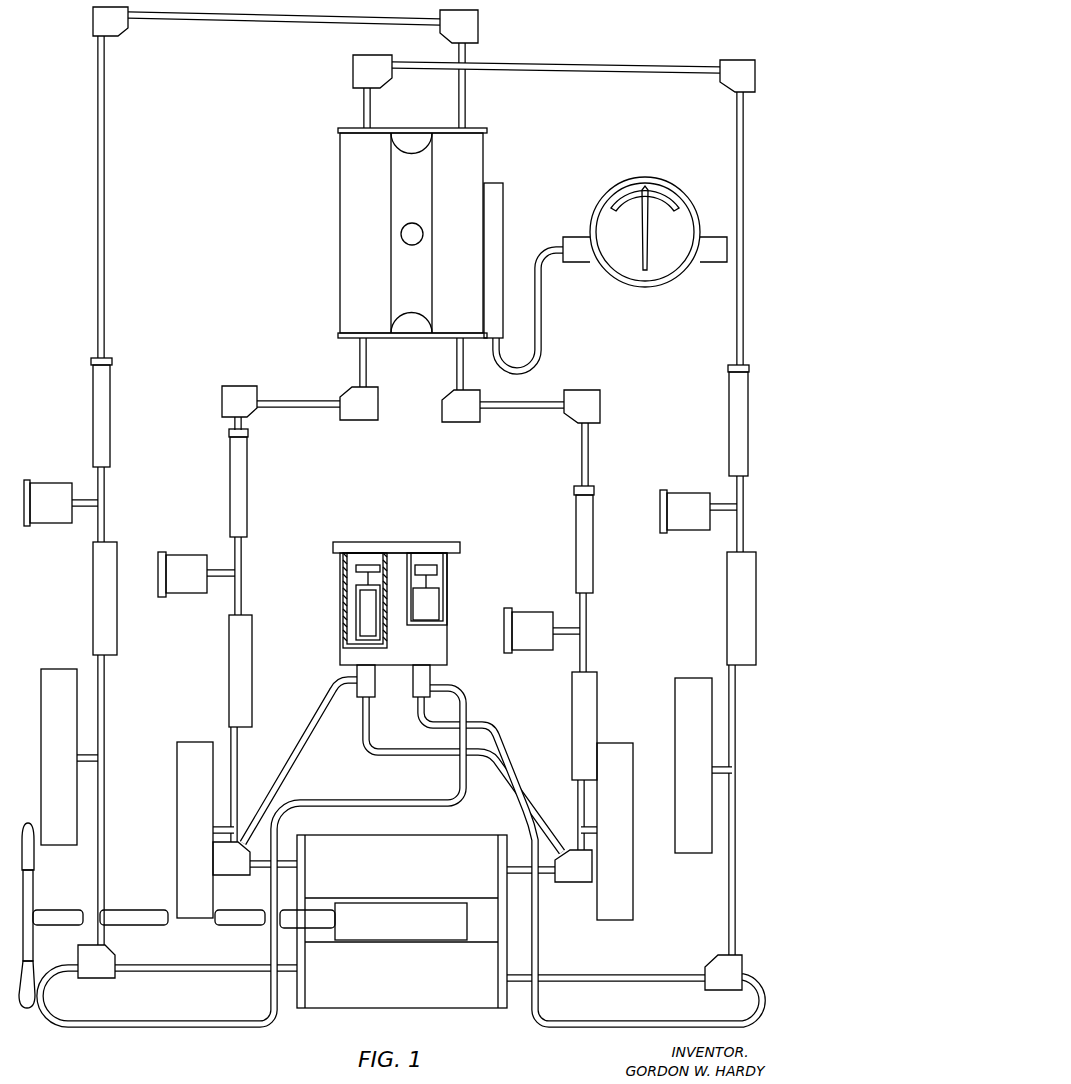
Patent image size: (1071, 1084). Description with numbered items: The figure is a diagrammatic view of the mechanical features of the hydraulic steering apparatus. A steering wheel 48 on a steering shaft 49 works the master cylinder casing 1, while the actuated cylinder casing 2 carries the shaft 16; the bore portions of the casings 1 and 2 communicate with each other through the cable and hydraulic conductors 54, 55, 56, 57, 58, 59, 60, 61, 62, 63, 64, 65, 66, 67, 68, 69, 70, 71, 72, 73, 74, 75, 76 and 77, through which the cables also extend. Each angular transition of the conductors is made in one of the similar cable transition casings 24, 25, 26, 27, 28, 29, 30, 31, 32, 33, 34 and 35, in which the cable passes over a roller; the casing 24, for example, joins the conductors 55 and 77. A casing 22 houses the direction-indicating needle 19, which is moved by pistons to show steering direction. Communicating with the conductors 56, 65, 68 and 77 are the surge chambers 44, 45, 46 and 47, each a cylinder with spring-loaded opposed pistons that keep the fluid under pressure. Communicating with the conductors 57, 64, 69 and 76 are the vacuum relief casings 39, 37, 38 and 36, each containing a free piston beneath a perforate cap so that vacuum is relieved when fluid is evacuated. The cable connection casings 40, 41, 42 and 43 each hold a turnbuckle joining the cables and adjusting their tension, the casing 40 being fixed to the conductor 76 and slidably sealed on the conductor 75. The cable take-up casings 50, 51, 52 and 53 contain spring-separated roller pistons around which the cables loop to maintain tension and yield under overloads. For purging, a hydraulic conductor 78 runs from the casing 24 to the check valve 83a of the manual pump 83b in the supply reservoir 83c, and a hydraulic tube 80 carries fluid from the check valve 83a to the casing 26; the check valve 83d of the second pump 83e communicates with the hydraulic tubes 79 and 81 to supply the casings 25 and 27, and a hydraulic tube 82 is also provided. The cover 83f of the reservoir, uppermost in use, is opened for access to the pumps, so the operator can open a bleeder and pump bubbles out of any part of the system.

The casing 1 is at (465, 998).
The casing 2 is at (470, 162).
The shaft 16 is at (400, 236).
The direction-indicating needle 19 is at (648, 250).
The casing 22 is at (648, 288).
The cable transition casing 24 is at (95, 968).
The cable transition casing 25 is at (728, 970).
The cable transition casing 26 is at (578, 870).
The cable transition casing 27 is at (233, 860).
The cable transition casing 28 is at (590, 405).
The cable transition casing 29 is at (466, 412).
The cable transition casing 30 is at (360, 410).
The cable transition casing 31 is at (235, 400).
The cable transition casing 32 is at (117, 32).
The cable transition casing 33 is at (353, 72).
The cable transition casing 34 is at (478, 25).
The cable transition casing 35 is at (728, 80).
The vacuum relief casing 36 is at (55, 500).
The vacuum relief casing 37 is at (190, 570).
The vacuum relief casing 38 is at (540, 628).
The vacuum relief casing 39 is at (683, 515).
The cable connection casing 40 is at (105, 408).
The cable connection casing 41 is at (235, 490).
The cable connection casing 42 is at (588, 560).
The cable connection casing 43 is at (735, 417).
The surge chamber 44 is at (60, 680).
The surge chamber 45 is at (190, 785).
The surge chamber 46 is at (620, 880).
The surge chamber 47 is at (690, 705).
The steering wheel 48 is at (30, 898).
The steering shaft 49 is at (148, 915).
The cable take-up casing 50 is at (108, 616).
The cable take-up casing 51 is at (238, 670).
The cable take-up casing 52 is at (585, 712).
The cable take-up casing 53 is at (738, 607).
The cable and hydraulic conductor 54 is at (630, 977).
The cable and hydraulic conductor 55 is at (173, 970).
The cable and hydraulic conductor 56 is at (735, 862).
The cable and hydraulic conductor 57 is at (740, 507).
The cable and hydraulic conductor 58 is at (744, 255).
The cable and hydraulic conductor 59 is at (592, 68).
The cable and hydraulic conductor 60 is at (371, 98).
The cable and hydraulic conductor 61 is at (368, 370).
The cable and hydraulic conductor 62 is at (318, 402).
The cable and hydraulic conductor 63 is at (233, 424).
The cable and hydraulic conductor 64 is at (235, 573).
The cable and hydraulic conductor 65 is at (236, 757).
The cable and hydraulic conductor 66 is at (290, 858).
The cable and hydraulic conductor 67 is at (515, 858).
The cable and hydraulic conductor 68 is at (581, 810).
The cable and hydraulic conductor 69 is at (583, 630).
The cable and hydraulic conductor 70 is at (588, 450).
The cable and hydraulic conductor 71 is at (530, 402).
The cable and hydraulic conductor 72 is at (457, 370).
The cable and hydraulic conductor 73 is at (466, 98).
The cable and hydraulic conductor 74 is at (265, 22).
The cable and hydraulic conductor 75 is at (105, 243).
The cable and hydraulic conductor 76 is at (102, 503).
The cable and hydraulic conductor 77 is at (100, 758).
The hydraulic conductor 78 is at (175, 1027).
The hydraulic tube 79 is at (605, 1022).
The hydraulic tube 80 is at (508, 752).
The hydraulic tube 81 is at (300, 745).
The hydraulic tube 82 is at (541, 330).
The check valve 83a is at (430, 685).
The pump 83b is at (432, 582).
The supply reservoir 83c is at (345, 598).
The check valve 83d is at (357, 680).
The pump 83e is at (365, 620).
The cover 83f is at (385, 547).